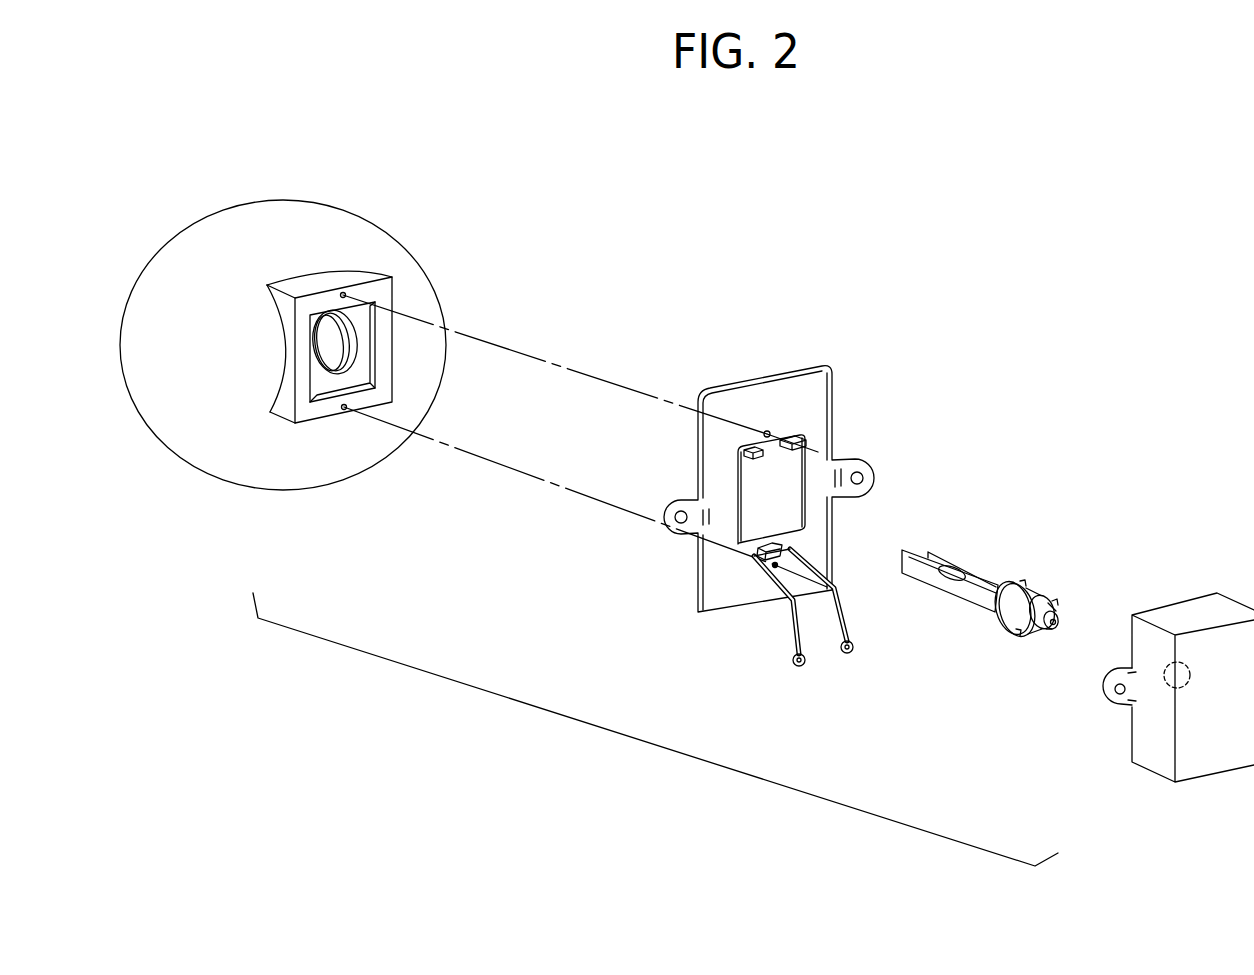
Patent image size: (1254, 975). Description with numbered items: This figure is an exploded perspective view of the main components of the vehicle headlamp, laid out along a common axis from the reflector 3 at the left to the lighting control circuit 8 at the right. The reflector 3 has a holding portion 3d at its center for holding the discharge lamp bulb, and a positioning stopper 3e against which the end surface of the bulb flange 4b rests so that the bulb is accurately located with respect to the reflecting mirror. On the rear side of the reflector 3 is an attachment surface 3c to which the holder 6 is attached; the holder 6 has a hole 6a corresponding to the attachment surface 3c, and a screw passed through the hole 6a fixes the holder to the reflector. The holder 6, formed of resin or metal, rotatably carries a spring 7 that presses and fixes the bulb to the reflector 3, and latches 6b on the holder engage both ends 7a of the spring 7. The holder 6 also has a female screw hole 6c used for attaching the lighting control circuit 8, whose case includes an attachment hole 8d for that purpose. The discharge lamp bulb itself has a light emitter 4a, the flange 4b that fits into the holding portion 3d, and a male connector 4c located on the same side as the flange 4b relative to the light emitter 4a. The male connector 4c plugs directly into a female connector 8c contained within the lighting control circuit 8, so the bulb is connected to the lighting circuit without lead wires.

The reflector 3 is at (248, 201).
The attachment surface 3c is at (334, 404).
The holding portion 3d is at (351, 318).
The positioning stopper 3e is at (350, 326).
The holder 6 is at (728, 382).
The hole 6a is at (767, 430).
The latches 6b is at (794, 434).
The female screw hole 6c is at (858, 468).
The spring 7 is at (780, 594).
The ends of the spring 7a is at (805, 665).
The light emitter 4a is at (957, 570).
The flange 4b is at (1012, 590).
The male connector 4c is at (1034, 600).
The lighting control circuit 8 is at (1165, 609).
The female connector 8c is at (1190, 672).
The attachment hole 8d is at (1120, 683).